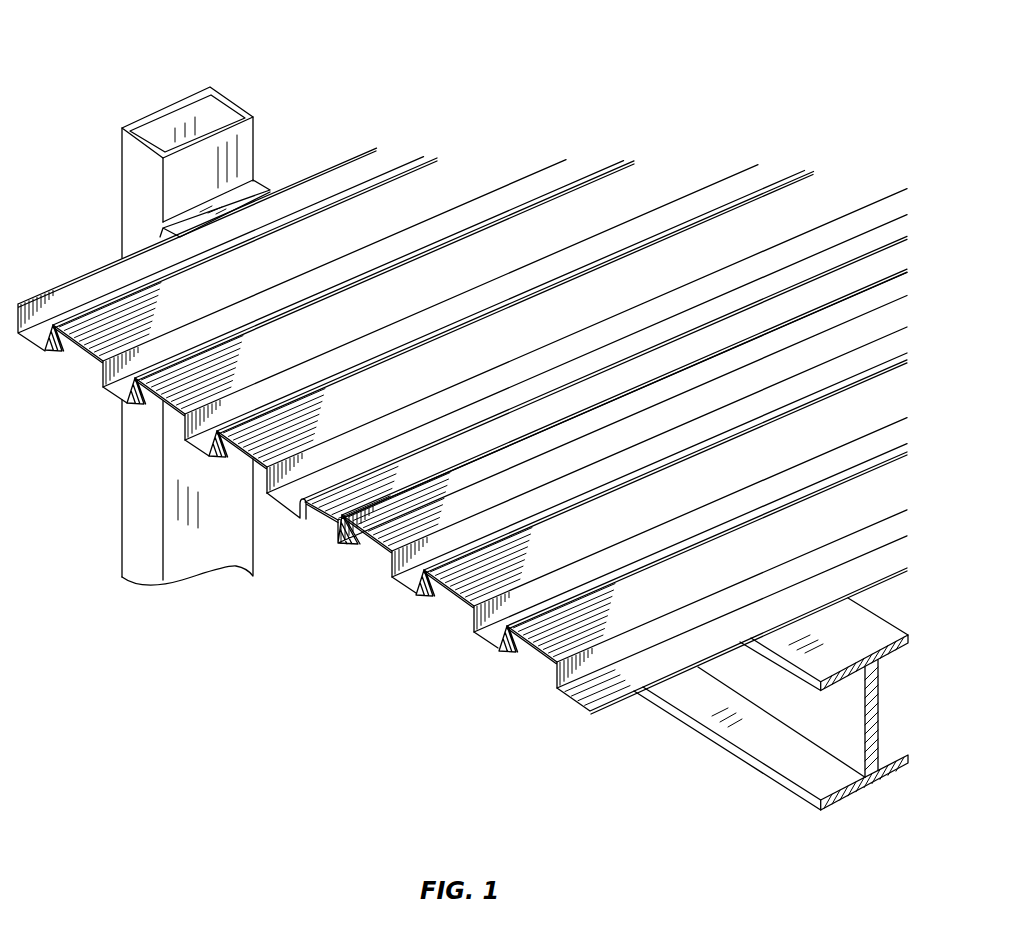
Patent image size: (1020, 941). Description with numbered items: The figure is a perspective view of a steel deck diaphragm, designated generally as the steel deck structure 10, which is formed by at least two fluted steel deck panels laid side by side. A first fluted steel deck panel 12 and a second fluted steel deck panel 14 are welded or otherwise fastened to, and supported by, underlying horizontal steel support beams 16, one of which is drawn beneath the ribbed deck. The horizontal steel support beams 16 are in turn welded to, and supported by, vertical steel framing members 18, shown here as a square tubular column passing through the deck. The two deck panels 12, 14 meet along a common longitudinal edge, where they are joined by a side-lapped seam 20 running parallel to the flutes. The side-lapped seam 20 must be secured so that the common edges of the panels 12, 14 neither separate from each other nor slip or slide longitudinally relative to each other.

The steel deck structure 10 is at (710, 83).
The first fluted steel deck panel 12 is at (77, 349).
The second fluted steel deck panel 14 is at (488, 646).
The horizontal steel support beams 16 is at (752, 748).
The vertical steel framing members 18 is at (125, 476).
The side-lapped seam 20 is at (298, 540).